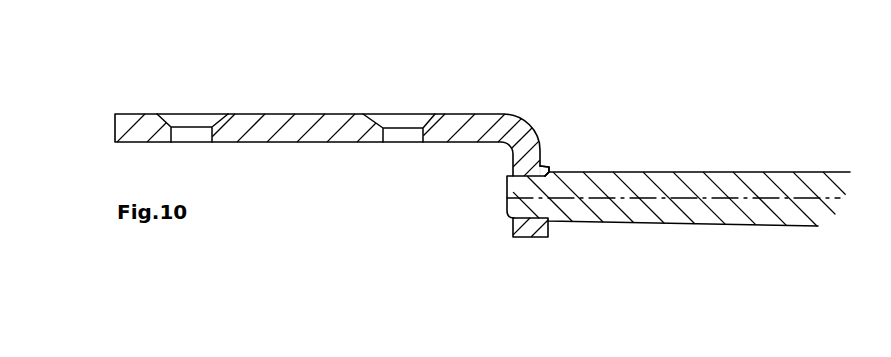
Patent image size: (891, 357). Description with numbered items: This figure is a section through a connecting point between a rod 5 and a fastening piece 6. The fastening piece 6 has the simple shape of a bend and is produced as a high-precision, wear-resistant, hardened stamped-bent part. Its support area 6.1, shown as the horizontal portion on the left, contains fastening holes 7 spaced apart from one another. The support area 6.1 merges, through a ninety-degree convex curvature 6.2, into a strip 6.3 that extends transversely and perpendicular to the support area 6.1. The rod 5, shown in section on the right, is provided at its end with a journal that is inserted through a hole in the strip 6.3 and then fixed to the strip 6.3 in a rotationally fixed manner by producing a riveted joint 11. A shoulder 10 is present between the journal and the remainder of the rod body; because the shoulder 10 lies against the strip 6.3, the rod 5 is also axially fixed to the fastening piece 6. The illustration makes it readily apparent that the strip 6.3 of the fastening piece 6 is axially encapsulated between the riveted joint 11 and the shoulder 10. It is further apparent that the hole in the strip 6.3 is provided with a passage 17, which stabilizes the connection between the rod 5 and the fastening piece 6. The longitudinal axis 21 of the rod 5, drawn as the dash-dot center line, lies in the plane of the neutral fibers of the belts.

The rod 5 is at (700, 177).
The fastening piece 6 is at (348, 74).
The support area 6.1 is at (276, 113).
The convex curvature 6.2 is at (528, 124).
The strip 6.3 is at (542, 152).
The fastening hole 7 is at (194, 113).
The shoulder 10 is at (548, 220).
The riveted joint 11 is at (509, 180).
The passage 17 is at (550, 167).
The longitudinal axis 21 is at (780, 200).